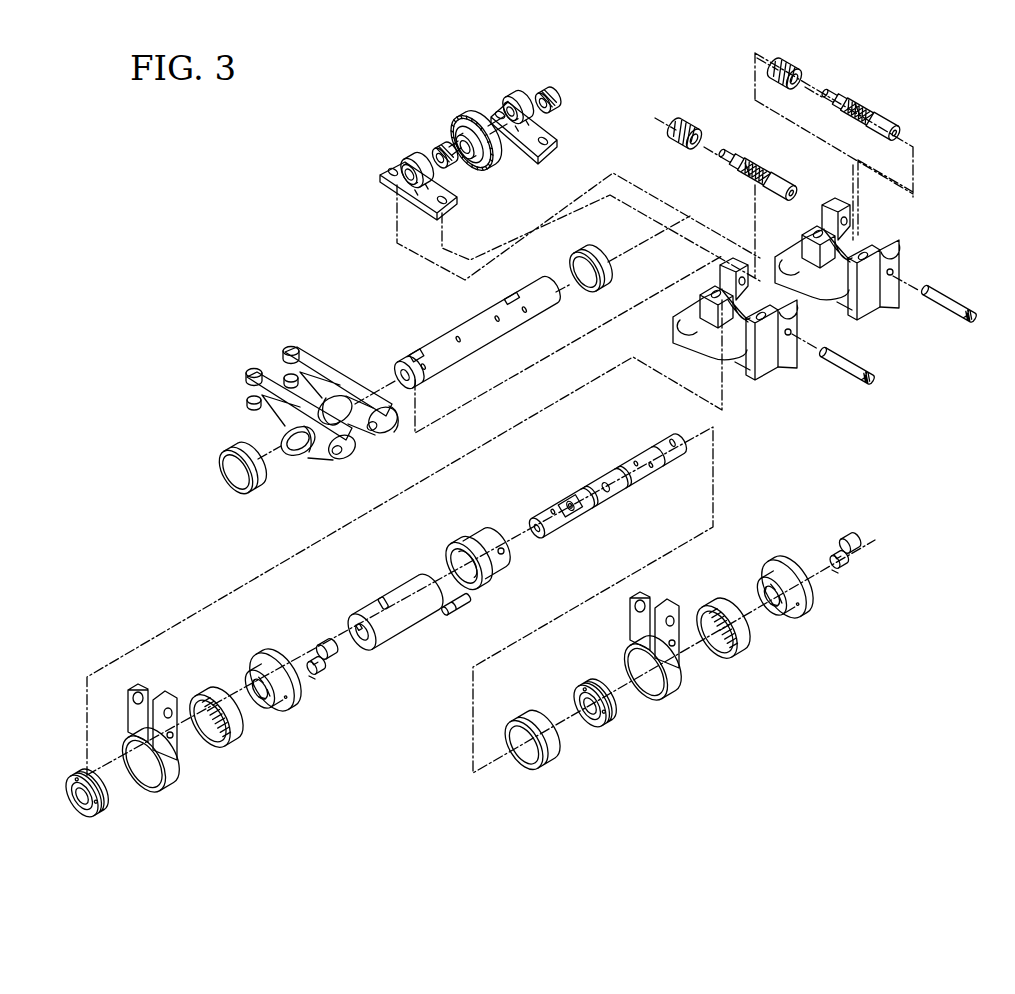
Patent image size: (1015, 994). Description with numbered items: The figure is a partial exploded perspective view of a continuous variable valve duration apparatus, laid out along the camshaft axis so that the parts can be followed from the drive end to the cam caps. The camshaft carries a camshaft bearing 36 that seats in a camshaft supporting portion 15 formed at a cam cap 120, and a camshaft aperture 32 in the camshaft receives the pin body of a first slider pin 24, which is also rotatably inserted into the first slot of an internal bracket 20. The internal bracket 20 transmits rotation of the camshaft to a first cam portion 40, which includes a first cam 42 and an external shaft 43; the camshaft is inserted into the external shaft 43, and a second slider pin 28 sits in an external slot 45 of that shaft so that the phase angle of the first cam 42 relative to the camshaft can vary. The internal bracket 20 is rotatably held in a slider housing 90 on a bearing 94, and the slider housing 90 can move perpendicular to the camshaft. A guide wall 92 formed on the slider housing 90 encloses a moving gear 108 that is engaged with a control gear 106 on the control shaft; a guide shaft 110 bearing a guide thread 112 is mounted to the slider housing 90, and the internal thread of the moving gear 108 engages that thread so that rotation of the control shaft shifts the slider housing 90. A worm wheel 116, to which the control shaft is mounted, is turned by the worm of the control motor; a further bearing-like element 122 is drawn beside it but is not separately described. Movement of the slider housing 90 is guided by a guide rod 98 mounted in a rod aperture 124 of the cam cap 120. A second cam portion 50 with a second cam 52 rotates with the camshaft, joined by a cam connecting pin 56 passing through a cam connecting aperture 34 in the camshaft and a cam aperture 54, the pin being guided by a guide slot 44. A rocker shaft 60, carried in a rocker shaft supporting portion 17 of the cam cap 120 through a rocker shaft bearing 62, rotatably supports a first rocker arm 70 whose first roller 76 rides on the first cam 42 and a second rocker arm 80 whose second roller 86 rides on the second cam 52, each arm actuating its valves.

The camshaft supporting portion 15 is at (732, 355).
The rocker shaft supporting portion 17 is at (690, 330).
The internal bracket 20 is at (276, 655).
The first slider pin 24 is at (320, 630).
The second slider pin 28 is at (316, 680).
The camshaft aperture 32 is at (570, 504).
The cam connecting aperture 34 is at (607, 485).
The camshaft bearing 36 is at (68, 772).
The first cam portion 40 is at (455, 664).
The first cam 42 is at (510, 722).
The external shaft 43 is at (388, 662).
The guide slot 44 is at (395, 615).
The external slot 45 is at (355, 643).
The second cam portion 50 is at (505, 530).
The second cam 52 is at (470, 545).
The cam aperture 54 is at (505, 553).
The cam connecting pin 56 is at (448, 617).
The rocker shaft 60 is at (432, 328).
The rocker shaft bearing 62 is at (233, 452).
The first rocker arm 70 is at (340, 375).
The first roller 76 is at (394, 440).
The second rocker arm 80 is at (263, 366).
The second roller 86 is at (348, 458).
The slider housing 90 is at (178, 788).
The guide wall 92 is at (148, 683).
The bearing 94 is at (236, 738).
The guide rod 98 is at (874, 384).
The control gear 106 is at (422, 151).
The moving gear 108 is at (678, 124).
The guide shaft 110 is at (782, 167).
The guide thread 112 is at (760, 165).
The worm wheel 116 is at (468, 112).
The cam cap 120 is at (770, 388).
The bearing 122 is at (513, 97).
The rod aperture 124 is at (790, 336).